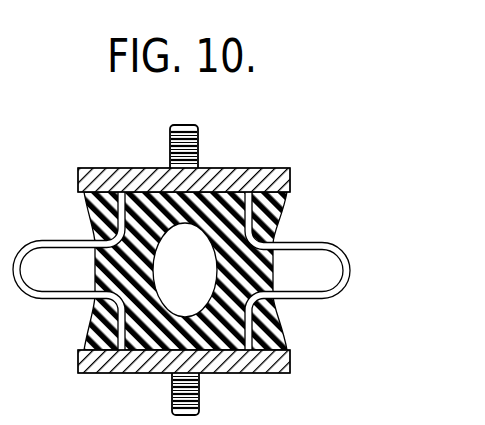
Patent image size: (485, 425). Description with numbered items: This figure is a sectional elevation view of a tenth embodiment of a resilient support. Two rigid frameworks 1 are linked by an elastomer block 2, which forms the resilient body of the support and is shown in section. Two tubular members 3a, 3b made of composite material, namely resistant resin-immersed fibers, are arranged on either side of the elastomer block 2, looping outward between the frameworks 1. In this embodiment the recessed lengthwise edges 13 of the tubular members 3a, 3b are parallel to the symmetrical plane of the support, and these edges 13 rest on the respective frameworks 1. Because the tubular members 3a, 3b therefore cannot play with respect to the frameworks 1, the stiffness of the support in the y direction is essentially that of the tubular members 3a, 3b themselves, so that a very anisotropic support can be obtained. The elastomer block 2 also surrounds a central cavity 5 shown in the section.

The framework 1 is at (220, 180).
The linking elastomer block 2 is at (258, 268).
The tubular member 3a is at (18, 260).
The tubular member 3b is at (343, 258).
The cavity 5 is at (194, 281).
The recessed lengthwise edge 13 is at (237, 342).